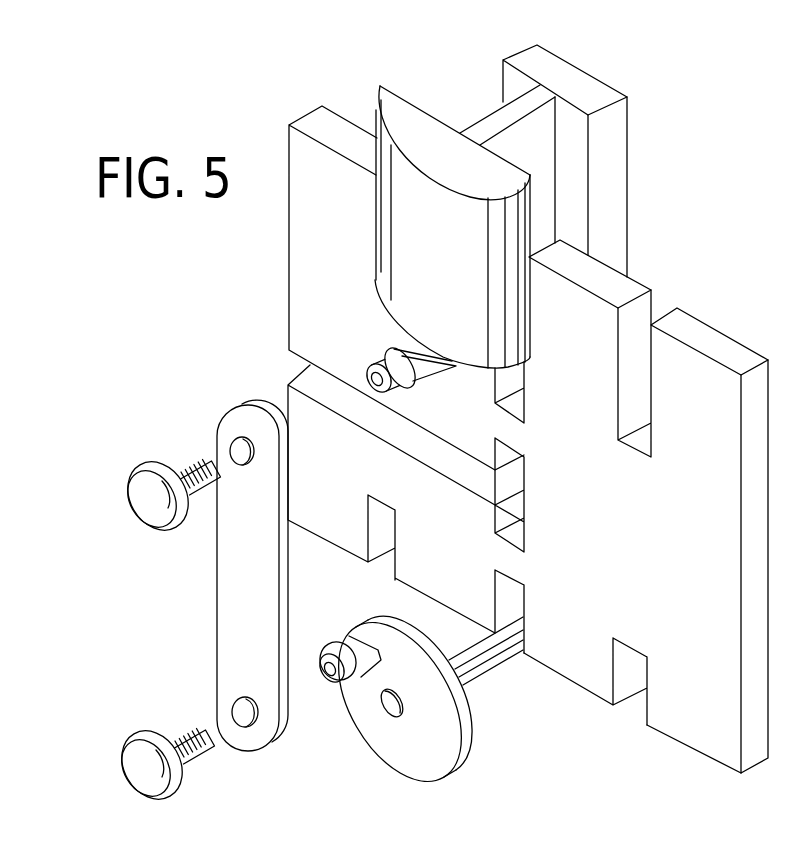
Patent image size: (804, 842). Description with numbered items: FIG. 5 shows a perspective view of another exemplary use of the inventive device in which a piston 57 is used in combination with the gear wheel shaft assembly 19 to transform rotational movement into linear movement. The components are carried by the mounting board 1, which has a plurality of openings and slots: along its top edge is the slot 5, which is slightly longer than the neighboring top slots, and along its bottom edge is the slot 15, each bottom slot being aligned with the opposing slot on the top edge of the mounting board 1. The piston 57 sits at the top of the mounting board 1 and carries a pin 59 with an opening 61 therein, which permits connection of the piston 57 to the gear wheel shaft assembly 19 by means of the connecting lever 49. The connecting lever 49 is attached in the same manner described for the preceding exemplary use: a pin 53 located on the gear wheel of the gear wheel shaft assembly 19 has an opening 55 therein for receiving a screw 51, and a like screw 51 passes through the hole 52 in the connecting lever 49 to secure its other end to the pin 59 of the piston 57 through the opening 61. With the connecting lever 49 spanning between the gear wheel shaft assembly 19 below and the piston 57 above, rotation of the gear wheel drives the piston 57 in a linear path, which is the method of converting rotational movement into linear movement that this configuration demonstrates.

The mounting board 1 is at (528, 409).
The slot 5 is at (510, 382).
The slot 15 is at (502, 613).
The gear wheel shaft assembly 19 is at (467, 728).
The connecting lever 49 is at (252, 575).
The screw 51 is at (128, 468).
The hole 52 is at (234, 727).
The pin 53 is at (330, 645).
The opening 55 is at (327, 677).
The piston 57 is at (427, 108).
The pin 59 is at (385, 356).
The opening 61 is at (375, 373).